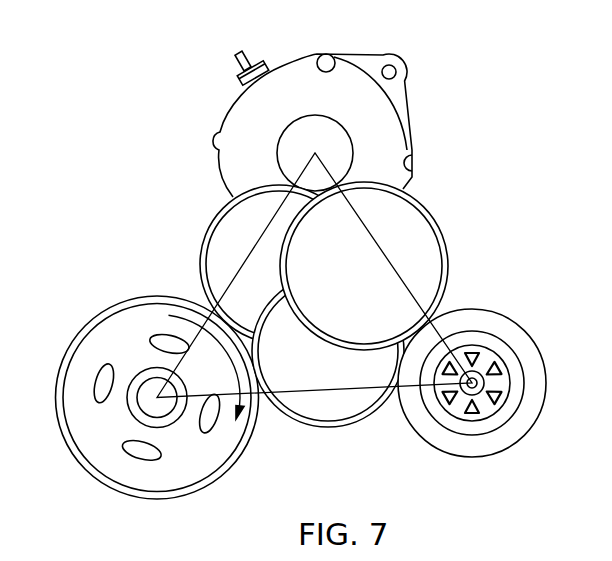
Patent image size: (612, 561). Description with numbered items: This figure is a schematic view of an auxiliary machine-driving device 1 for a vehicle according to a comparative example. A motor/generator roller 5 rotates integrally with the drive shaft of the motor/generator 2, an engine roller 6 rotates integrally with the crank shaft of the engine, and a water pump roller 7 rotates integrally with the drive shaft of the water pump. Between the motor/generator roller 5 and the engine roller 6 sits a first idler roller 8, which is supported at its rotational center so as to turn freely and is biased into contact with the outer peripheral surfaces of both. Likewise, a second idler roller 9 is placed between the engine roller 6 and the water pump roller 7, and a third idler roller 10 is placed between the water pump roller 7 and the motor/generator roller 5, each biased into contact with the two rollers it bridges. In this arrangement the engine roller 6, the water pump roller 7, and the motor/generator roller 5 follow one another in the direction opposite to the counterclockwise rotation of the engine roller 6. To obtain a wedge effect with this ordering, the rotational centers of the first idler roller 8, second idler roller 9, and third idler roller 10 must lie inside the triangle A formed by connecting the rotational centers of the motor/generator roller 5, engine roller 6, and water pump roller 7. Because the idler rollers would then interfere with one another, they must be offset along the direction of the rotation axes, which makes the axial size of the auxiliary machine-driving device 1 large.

The auxiliary machine-driving device 1 is at (437, 93).
The motor/generator 2 is at (297, 75).
The motor/generator roller 5 is at (277, 135).
The engine roller 6 is at (83, 326).
The water pump roller 7 is at (513, 320).
The first idler roller 8 is at (203, 247).
The second idler roller 9 is at (338, 426).
The third idler roller 10 is at (442, 228).
The triangle A is at (357, 389).